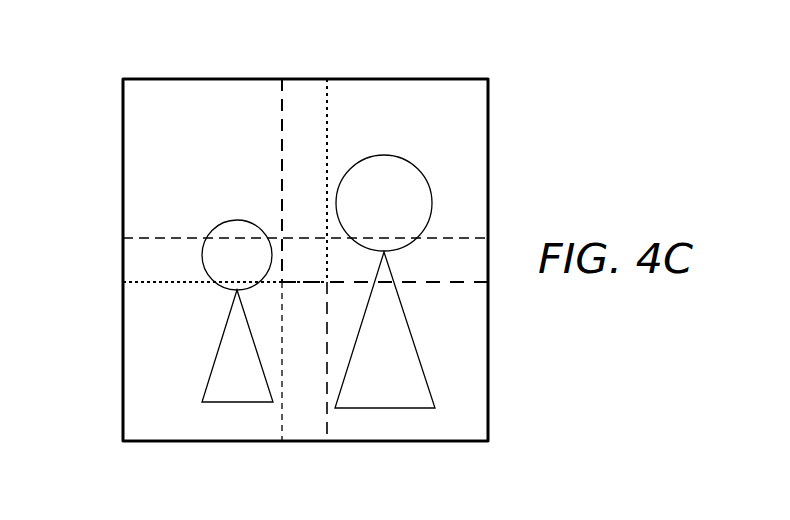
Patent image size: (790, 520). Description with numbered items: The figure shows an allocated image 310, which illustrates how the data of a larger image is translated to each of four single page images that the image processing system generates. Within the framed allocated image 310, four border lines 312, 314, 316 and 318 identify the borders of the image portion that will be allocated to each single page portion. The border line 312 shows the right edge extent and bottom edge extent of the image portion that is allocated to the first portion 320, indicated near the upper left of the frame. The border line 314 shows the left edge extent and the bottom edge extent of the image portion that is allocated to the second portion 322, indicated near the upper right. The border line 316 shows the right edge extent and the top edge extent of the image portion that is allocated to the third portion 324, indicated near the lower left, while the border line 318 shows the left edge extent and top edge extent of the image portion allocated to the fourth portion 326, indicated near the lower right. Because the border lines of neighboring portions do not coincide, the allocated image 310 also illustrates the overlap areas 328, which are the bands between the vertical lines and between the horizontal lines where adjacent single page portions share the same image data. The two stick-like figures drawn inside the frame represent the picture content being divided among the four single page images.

The allocated image 310 is at (84, 170).
The border line 312 is at (333, 95).
The border line 314 is at (282, 96).
The border line 316 is at (330, 415).
The border line 318 is at (282, 415).
The first portion 320 is at (166, 99).
The second portion 322 is at (458, 116).
The third portion 324 is at (158, 420).
The fourth portion 326 is at (445, 385).
The overlap areas 328 is at (308, 98).